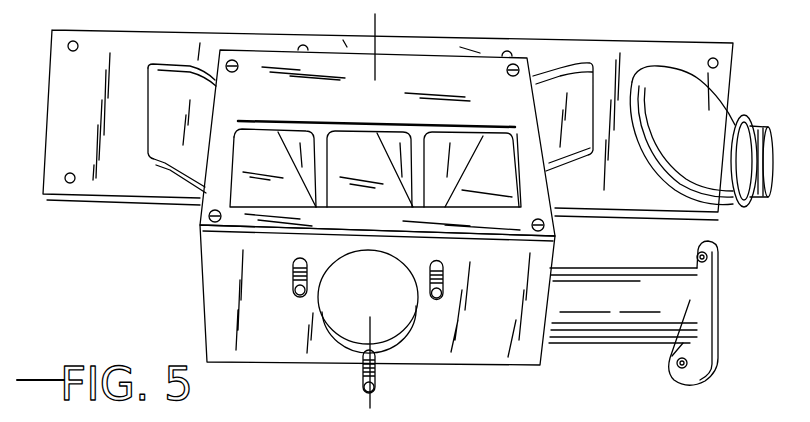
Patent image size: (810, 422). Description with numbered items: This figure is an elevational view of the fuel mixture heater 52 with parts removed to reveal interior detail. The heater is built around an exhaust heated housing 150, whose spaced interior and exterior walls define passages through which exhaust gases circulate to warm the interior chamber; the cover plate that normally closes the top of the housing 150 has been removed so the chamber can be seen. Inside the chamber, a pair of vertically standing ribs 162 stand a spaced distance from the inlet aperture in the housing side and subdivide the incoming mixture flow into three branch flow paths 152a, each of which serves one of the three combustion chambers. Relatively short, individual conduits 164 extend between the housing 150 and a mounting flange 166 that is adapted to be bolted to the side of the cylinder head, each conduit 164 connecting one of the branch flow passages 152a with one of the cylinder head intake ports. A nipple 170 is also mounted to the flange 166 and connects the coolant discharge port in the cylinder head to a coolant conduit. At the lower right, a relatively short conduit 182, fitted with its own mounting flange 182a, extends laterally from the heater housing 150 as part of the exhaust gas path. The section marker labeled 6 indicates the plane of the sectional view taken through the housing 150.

The fuel mixture heater 52 is at (128, 253).
The exhaust heated housing 150 is at (488, 349).
The branch flow paths 152a is at (285, 163).
The vertically standing ribs 162 is at (312, 150).
The individual conduits 164 is at (165, 88).
The mounting flange 166 is at (701, 109).
The nipple 170 is at (725, 160).
The conduit 182 is at (622, 328).
The mounting flange 182a is at (722, 317).
The section line 6- 6 is at (338, 402).